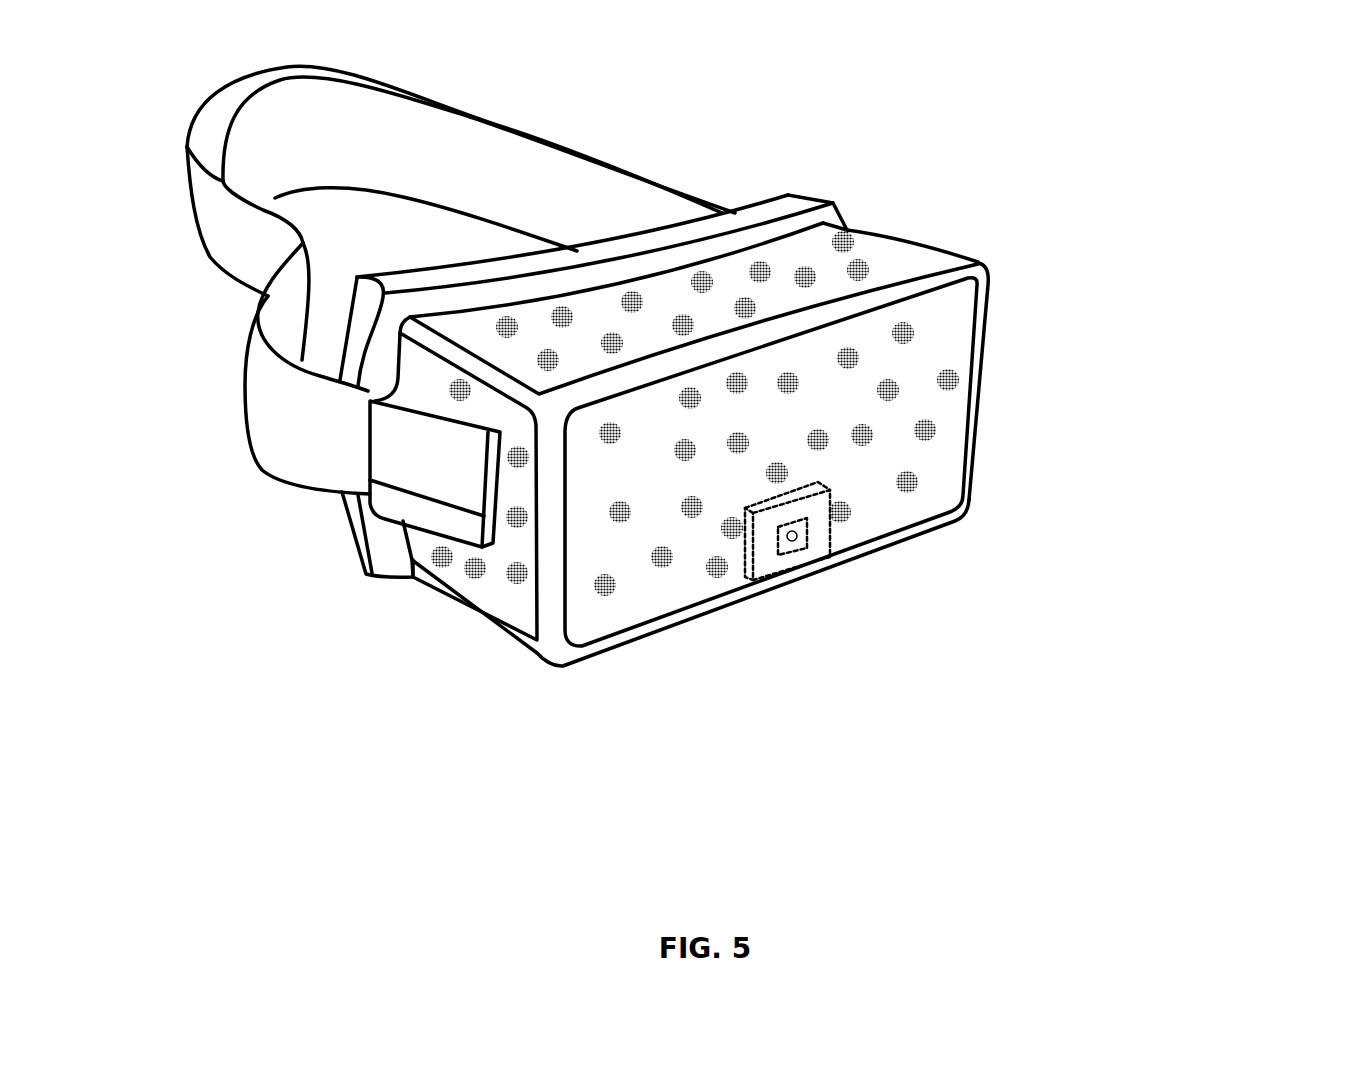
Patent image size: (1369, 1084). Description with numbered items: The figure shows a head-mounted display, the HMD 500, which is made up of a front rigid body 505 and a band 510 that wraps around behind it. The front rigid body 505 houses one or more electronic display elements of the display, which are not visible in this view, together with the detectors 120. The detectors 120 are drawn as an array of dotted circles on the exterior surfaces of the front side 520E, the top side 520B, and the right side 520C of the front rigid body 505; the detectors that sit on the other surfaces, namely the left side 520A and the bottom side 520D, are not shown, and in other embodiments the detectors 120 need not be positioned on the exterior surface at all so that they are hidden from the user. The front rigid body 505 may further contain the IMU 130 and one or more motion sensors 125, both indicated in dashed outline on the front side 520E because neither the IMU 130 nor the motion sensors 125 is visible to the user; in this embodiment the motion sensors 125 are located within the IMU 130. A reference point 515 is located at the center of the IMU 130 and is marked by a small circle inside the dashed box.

The HMD 500 is at (113, 63).
The band 510 is at (595, 148).
The front rigid body 505 is at (705, 466).
The left side 520A is at (938, 248).
The top side 520B is at (463, 325).
The right side 520C is at (507, 576).
The bottom side 520D is at (450, 630).
The front side 520E is at (608, 622).
The detectors 120 is at (958, 380).
The motion sensors 125 is at (768, 537).
The IMU 130 is at (830, 535).
The reference point 515 is at (800, 533).